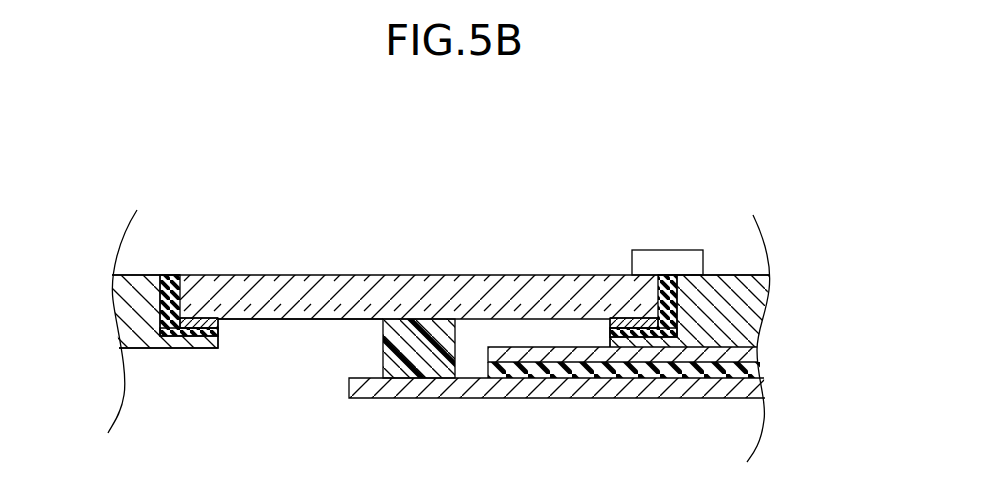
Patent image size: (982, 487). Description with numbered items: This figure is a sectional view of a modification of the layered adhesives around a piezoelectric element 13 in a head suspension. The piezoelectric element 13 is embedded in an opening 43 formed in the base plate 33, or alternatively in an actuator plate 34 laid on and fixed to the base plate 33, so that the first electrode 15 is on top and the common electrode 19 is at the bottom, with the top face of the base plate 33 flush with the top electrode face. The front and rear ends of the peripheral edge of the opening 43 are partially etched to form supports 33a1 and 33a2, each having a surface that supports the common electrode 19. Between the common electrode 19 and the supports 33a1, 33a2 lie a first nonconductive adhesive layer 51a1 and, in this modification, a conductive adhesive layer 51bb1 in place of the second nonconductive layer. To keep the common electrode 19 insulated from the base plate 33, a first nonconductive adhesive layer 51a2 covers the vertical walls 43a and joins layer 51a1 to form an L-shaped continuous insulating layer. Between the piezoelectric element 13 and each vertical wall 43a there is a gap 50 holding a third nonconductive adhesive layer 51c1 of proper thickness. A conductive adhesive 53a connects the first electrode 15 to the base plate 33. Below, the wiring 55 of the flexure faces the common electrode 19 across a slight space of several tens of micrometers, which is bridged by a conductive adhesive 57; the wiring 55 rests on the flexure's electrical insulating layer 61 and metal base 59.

The piezoelectric element 13 is at (342, 285).
The first electrode 15 is at (465, 275).
The common electrode 19 is at (332, 320).
The base plate 33 is at (148, 340).
The actuator plate 34 is at (364, 342).
The support 33a1 is at (610, 330).
The support 33a2 is at (217, 330).
The opening 43 is at (162, 277).
The vertical wall 43a is at (135, 278).
The gap 50 is at (175, 278).
The first nonconductive adhesive layer 51a1 is at (175, 331).
The first nonconductive adhesive layer 51a2 is at (165, 305).
The conductive adhesive layer 51bb1 is at (188, 318).
The third nonconductive adhesive layer 51c1 is at (178, 275).
The conductive adhesive 53a is at (658, 257).
The wiring 55 is at (752, 387).
The conductive adhesive 57 is at (440, 362).
The metal base 59 is at (750, 352).
The electrical insulating layer 61 is at (750, 368).